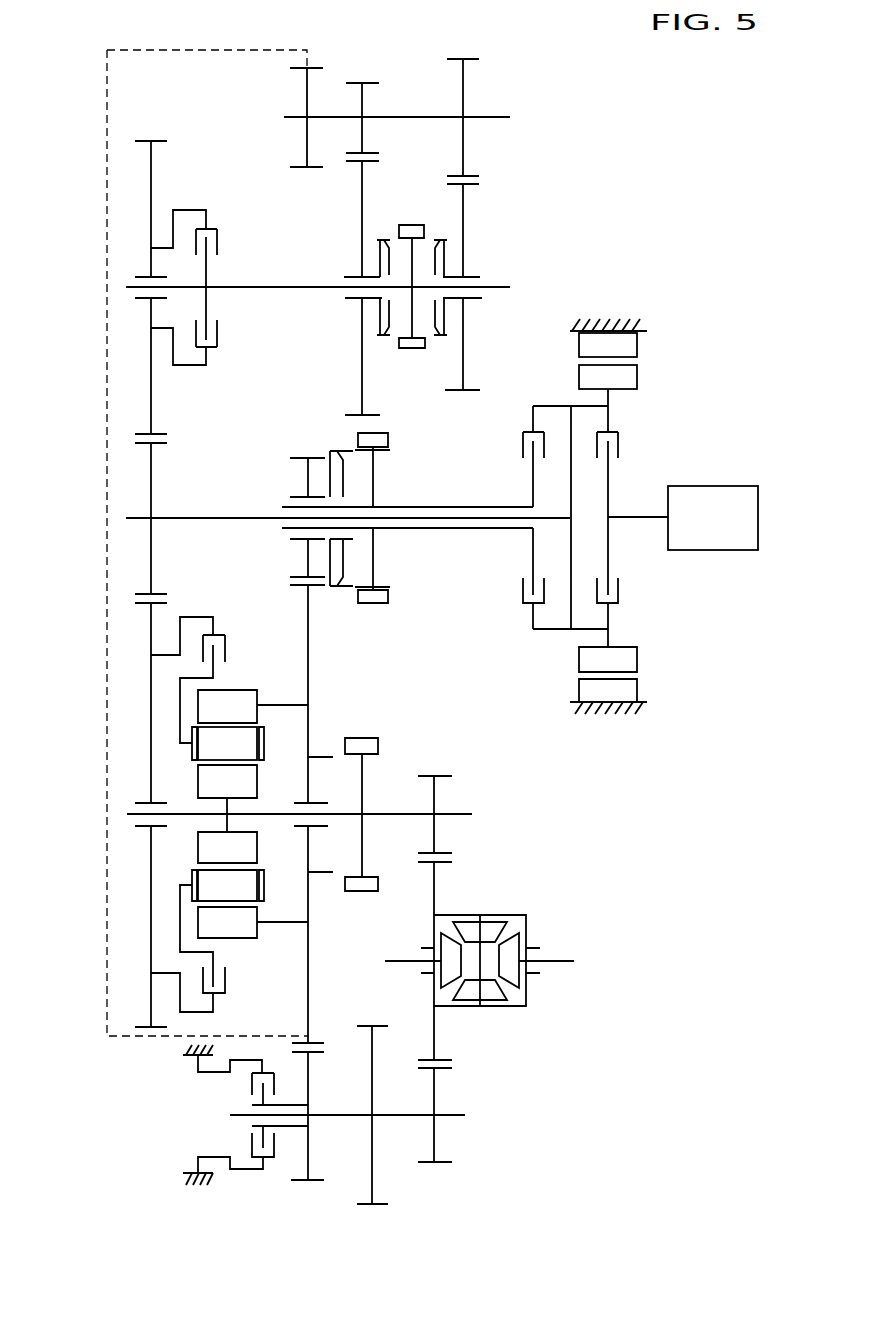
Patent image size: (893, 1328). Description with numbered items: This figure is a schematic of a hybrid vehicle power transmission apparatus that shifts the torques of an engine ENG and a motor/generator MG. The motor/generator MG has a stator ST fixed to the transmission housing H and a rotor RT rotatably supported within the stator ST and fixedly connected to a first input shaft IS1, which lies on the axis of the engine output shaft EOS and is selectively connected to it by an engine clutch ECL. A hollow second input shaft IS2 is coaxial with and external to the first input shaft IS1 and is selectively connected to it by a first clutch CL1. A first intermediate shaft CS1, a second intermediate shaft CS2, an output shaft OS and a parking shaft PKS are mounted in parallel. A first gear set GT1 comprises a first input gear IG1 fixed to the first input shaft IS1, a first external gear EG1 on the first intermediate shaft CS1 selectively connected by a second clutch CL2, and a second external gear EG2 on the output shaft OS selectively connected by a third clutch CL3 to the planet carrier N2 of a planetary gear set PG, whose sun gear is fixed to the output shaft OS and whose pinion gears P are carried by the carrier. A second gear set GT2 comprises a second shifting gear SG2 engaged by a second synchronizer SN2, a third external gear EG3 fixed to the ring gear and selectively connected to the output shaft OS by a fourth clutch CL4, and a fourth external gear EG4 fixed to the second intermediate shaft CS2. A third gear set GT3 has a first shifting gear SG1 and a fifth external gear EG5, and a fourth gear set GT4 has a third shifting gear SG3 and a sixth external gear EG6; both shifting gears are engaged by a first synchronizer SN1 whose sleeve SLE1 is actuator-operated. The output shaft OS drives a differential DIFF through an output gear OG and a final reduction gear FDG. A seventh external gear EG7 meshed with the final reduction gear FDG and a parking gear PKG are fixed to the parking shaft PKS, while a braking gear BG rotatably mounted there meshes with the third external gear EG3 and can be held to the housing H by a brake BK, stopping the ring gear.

The second intermediate shaft CS2 is at (510, 117).
The first intermediate shaft CS1 is at (510, 287).
The first input shaft IS1 is at (470, 519).
The second input shaft IS2 is at (410, 529).
The output shaft OS is at (455, 815).
The parking shaft PKS is at (455, 1113).
The first external gear EG1 is at (152, 163).
The second external gear EG2 is at (150, 622).
The third external gear EG3 is at (310, 678).
The fourth external gear EG4 is at (305, 88).
The fifth external gear EG5 is at (465, 80).
The sixth external gear EG6 is at (363, 100).
The seventh external gear EG7 is at (437, 1143).
The first gear set GT1 is at (152, 1042).
The second gear set GT2 is at (327, 1155).
The third gear set GT3 is at (486, 139).
The fourth gear set GT4 is at (364, 148).
The first shifting gear SG1 is at (464, 211).
The second shifting gear SG2 is at (307, 485).
The third shifting gear SG3 is at (361, 228).
The first clutch CL1 is at (514, 442).
The second clutch CL2 is at (227, 240).
The third clutch CL3 is at (230, 627).
The fourth clutch CL4 is at (385, 746).
The first synchronizer SN1 is at (393, 356).
The second synchronizer SN2 is at (397, 608).
The first sleeve SLE1 is at (413, 349).
The first input gear IG1 is at (153, 470).
The motor/generator MG is at (630, 362).
The stator ST is at (608, 346).
The rotor RT is at (608, 378).
The transmission housing H is at (603, 320).
The engine clutch ECL is at (630, 447).
The engine output shaft EOS is at (640, 519).
The engine ENG is at (713, 518).
The planetary gear set PG is at (184, 747).
The pinion gear P is at (227, 743).
The second rotation element (planet carrier) N2 is at (192, 750).
The output gear OG is at (436, 790).
The final reduction gear FDG is at (436, 885).
The differential DIFF is at (537, 925).
The brake BK is at (270, 1166).
The braking gear BG is at (309, 1152).
The parking gear PKG is at (373, 1185).